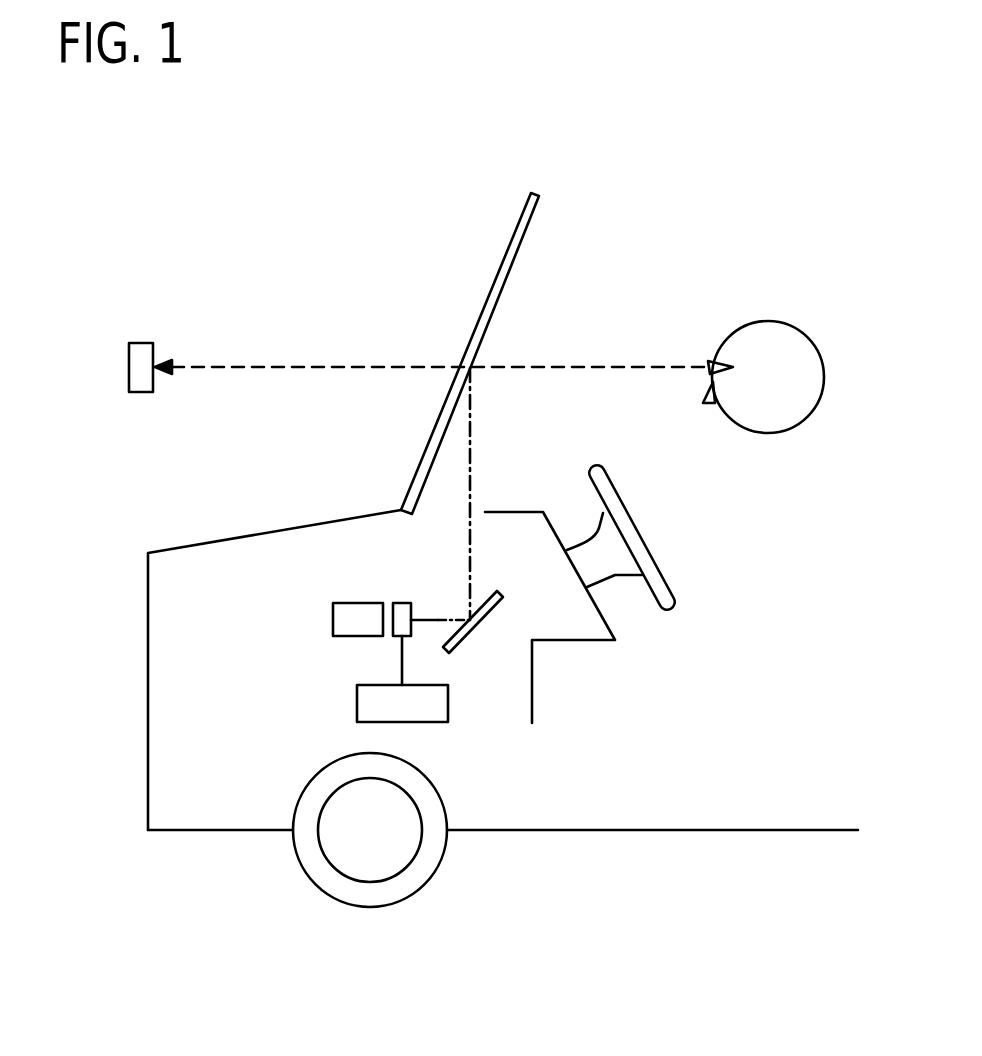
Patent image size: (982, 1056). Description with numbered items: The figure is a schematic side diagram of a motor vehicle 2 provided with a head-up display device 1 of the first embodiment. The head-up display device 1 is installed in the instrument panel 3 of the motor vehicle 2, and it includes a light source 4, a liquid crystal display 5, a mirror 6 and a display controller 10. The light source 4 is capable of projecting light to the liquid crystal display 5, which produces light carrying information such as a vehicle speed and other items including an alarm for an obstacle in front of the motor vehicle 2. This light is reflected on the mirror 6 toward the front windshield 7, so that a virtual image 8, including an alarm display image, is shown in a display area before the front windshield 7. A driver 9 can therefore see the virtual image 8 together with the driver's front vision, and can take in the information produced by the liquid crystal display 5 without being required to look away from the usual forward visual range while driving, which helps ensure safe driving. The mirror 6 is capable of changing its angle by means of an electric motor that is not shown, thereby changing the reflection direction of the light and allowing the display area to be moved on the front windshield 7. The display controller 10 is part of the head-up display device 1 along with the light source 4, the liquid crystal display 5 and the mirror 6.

The head-up display device 1 is at (411, 560).
The motor vehicle 2 is at (170, 532).
The instrument panel 3 is at (518, 512).
The light source 4 is at (346, 603).
The liquid crystal display 5 is at (402, 603).
The mirror 6 is at (460, 646).
The front windshield 7 is at (500, 263).
The virtual image 8 is at (142, 343).
The driver 9 is at (778, 320).
The display controller 10 is at (357, 703).